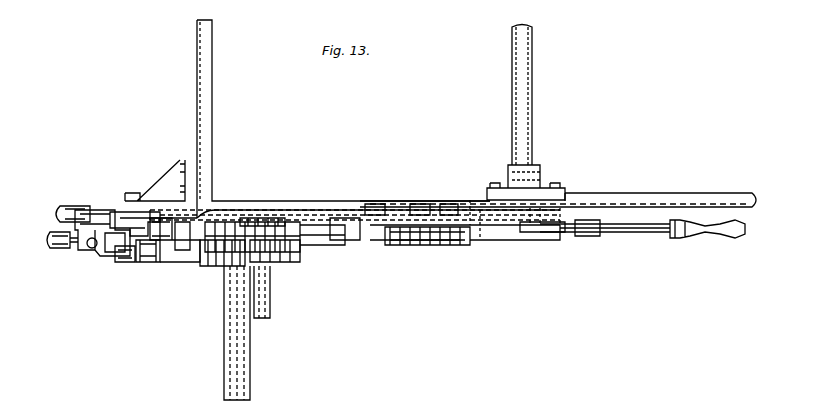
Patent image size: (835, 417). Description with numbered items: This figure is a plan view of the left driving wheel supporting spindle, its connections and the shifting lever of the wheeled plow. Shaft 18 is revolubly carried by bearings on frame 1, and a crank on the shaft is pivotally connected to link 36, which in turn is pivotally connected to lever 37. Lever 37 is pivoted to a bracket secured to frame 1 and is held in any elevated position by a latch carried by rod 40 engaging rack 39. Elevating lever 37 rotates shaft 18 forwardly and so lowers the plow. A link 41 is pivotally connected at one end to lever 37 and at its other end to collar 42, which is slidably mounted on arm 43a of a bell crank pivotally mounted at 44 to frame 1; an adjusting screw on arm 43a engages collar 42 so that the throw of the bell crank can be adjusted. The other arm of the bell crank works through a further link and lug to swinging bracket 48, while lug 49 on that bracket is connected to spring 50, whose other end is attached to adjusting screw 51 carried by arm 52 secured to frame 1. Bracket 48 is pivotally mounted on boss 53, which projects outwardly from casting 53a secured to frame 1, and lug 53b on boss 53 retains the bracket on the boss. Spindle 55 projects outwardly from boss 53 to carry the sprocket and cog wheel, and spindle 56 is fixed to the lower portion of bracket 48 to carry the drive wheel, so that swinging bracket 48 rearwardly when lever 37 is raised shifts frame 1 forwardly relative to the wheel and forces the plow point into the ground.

The frame 1 is at (690, 200).
The shaft 18 is at (533, 134).
The link 36 is at (535, 213).
The lever 37 is at (622, 233).
The rack 39 is at (428, 232).
The rod 40 is at (655, 233).
The link 41 is at (330, 210).
The collar 42 is at (127, 224).
The arm of bell crank 43a is at (122, 256).
The pivot 44 is at (142, 258).
The swinging bracket 48 is at (222, 248).
The lug 49 is at (170, 268).
The spring 50 is at (97, 215).
The adjusting screw 51 is at (52, 228).
The arm 52 is at (72, 206).
The boss 53 is at (278, 248).
The casting 53a is at (266, 220).
The lug 53b is at (265, 258).
The spindle 55 is at (270, 295).
The spindle 56 is at (250, 362).